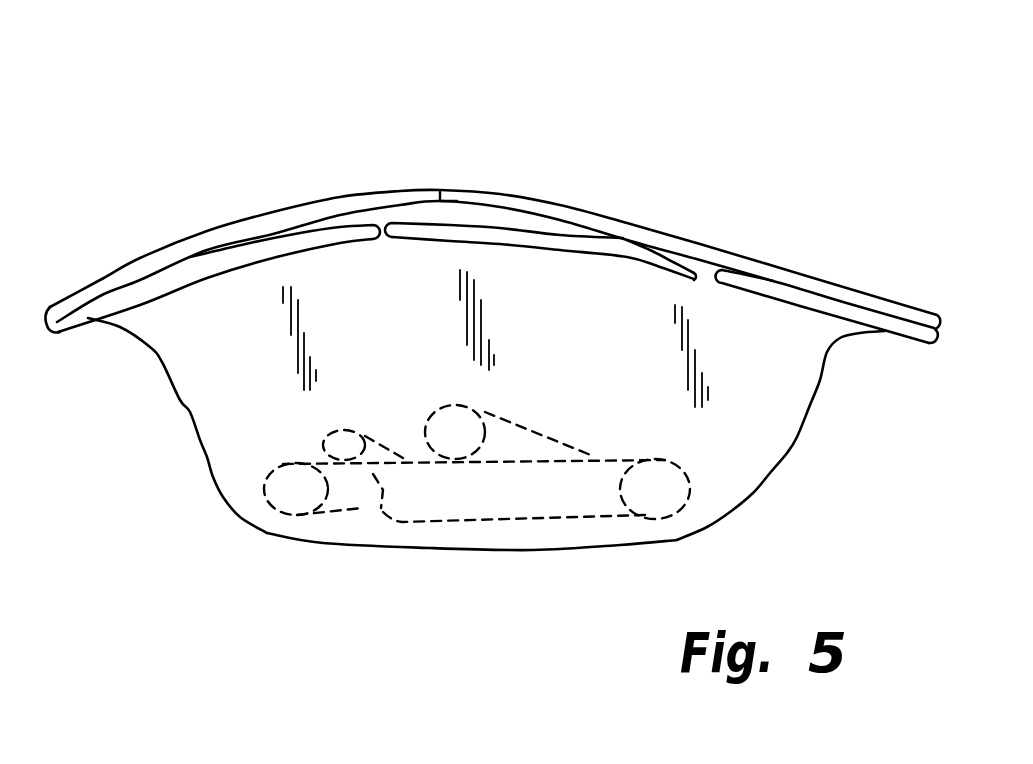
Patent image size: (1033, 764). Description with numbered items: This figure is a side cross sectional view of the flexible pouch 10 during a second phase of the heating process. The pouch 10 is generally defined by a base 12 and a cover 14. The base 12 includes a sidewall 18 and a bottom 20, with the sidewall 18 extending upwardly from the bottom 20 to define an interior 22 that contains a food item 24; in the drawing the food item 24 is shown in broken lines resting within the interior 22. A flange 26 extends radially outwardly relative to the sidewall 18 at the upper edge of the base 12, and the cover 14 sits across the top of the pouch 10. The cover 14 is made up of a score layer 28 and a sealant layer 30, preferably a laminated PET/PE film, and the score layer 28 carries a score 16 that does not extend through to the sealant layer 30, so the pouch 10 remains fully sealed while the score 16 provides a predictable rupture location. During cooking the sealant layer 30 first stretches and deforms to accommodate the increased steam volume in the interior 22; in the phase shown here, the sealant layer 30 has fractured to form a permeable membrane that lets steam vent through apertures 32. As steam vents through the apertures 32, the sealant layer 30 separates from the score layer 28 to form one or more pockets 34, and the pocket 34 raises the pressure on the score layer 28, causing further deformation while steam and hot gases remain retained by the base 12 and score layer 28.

The flexible pouch 10 is at (167, 142).
The base 12 is at (486, 431).
The cover 14 is at (143, 242).
The score 16 is at (457, 200).
The sidewall 18 is at (799, 437).
The bottom 20 is at (362, 547).
The interior 22 is at (222, 398).
The food item 24 is at (547, 507).
The flange 26 is at (910, 345).
The score layer 28 is at (276, 218).
The sealant layer 30 is at (625, 252).
The apertures 32 is at (385, 233).
The pocket 34 is at (508, 222).